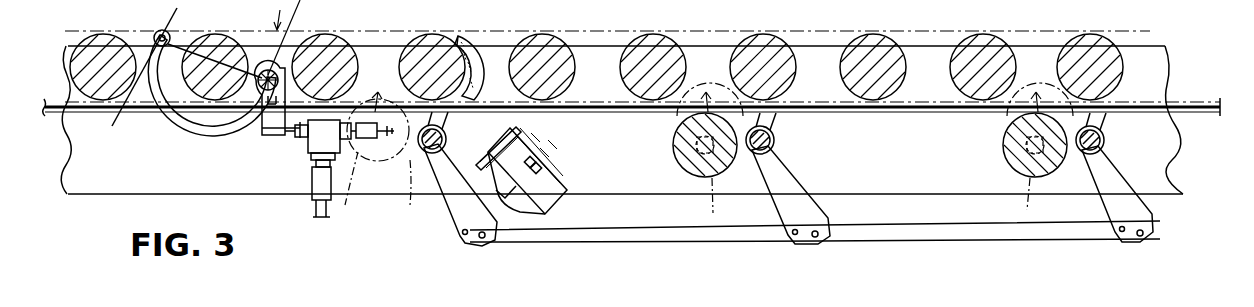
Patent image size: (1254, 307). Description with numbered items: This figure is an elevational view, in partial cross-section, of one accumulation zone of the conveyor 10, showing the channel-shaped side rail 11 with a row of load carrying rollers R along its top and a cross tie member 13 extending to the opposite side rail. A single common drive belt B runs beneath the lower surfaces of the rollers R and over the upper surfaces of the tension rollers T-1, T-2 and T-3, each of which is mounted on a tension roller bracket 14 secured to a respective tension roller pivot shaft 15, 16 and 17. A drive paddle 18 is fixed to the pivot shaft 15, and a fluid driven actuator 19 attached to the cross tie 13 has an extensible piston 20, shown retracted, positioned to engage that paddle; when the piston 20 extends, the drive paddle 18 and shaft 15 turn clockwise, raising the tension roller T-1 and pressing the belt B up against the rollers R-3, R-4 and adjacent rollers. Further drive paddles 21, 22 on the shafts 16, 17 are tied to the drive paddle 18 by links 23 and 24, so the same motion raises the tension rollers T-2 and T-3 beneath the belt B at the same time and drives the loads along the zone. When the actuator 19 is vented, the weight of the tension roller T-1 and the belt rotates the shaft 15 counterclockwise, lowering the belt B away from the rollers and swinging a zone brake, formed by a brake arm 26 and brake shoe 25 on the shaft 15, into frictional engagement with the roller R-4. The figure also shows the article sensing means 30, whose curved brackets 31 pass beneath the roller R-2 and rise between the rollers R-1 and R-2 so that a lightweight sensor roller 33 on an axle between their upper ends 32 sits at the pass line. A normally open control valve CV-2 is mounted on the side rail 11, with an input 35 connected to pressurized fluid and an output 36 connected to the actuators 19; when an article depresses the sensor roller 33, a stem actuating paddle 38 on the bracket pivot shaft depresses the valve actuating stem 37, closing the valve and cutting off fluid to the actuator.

The conveyor 10 is at (1177, 29).
The side rail 11 is at (132, 176).
The cross tie member 13 is at (520, 132).
The tension roller bracket 14 is at (1027, 205).
The tension roller pivot shaft 15 is at (446, 140).
The tension roller pivot shaft 16 is at (774, 138).
The tension roller pivot shaft 17 is at (1104, 138).
The drive paddle 18 is at (457, 217).
The fluid driven actuator 19 is at (564, 187).
The extensible piston 20 is at (520, 206).
The drive paddle 21 is at (803, 200).
The drive paddle 22 is at (1155, 212).
The link 23 is at (668, 210).
The link 24 is at (933, 228).
The brake shoe 25 is at (458, 34).
The brake arm 26 is at (488, 50).
The article sensing means 30 is at (181, 159).
The curved bracket 31 is at (182, 124).
The upper end of curved bracket 32 is at (173, 80).
The sensor roller 33 is at (171, 23).
The input 35 is at (311, 181).
The output 36 is at (367, 146).
The valve actuating stem 37 is at (290, 138).
The control valve stem actuating paddle 38 is at (262, 118).
The drive belt B is at (1220, 100).
The load carrying roller R is at (962, 44).
The load carrying roller R-1 is at (110, 46).
The load carrying roller R-2 is at (222, 50).
The load carrying roller R-3 is at (333, 47).
The load carrying roller R-4 is at (437, 46).
The tension roller T-1 is at (378, 165).
The tension roller T-2 is at (680, 160).
The tension roller T-3 is at (1008, 160).
The control valve CV-2 is at (330, 184).